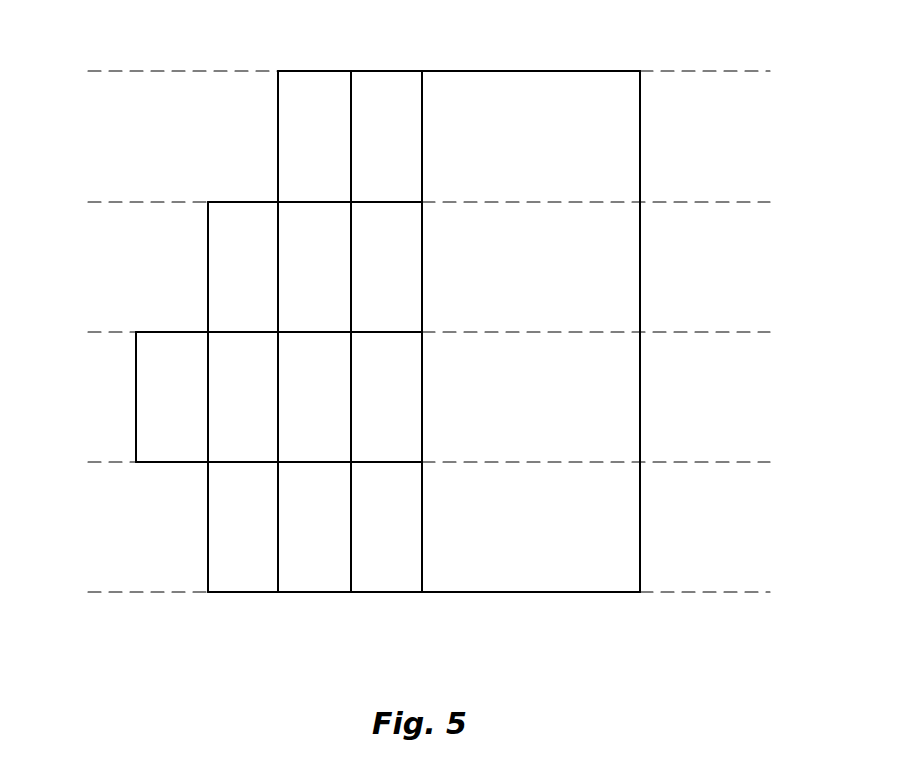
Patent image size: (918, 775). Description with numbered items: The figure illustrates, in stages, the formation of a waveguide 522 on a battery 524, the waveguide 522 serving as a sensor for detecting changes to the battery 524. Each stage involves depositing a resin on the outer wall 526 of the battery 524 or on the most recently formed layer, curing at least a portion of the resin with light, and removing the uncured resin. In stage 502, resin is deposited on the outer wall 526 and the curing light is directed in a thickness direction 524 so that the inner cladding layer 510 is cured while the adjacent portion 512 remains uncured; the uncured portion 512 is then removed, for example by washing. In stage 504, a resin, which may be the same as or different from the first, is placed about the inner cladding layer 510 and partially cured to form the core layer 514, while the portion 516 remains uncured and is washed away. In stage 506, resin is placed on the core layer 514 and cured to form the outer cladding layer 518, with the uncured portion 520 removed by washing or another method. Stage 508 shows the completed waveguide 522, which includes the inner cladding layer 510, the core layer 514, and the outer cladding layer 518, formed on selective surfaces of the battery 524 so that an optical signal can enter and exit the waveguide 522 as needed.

The stage 502 is at (772, 71).
The stage 504 is at (772, 202).
The stage 506 is at (772, 332).
The stage 508 is at (772, 462).
The inner cladding layer 510 is at (403, 76).
The uncured portion 512 is at (317, 76).
The core layer 514 is at (318, 278).
The uncured portion 516 is at (232, 276).
The outer cladding layer 518 is at (235, 388).
The uncured portion 520 is at (160, 436).
The waveguide 522 is at (425, 605).
The battery 524 is at (560, 76).
The outer wall 526 is at (424, 130).